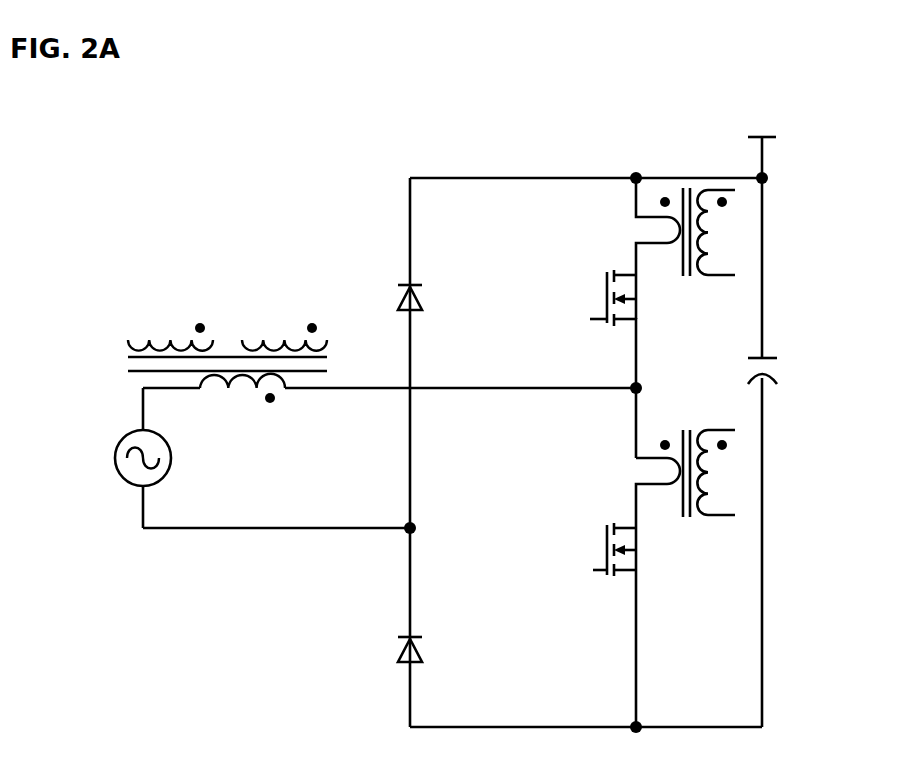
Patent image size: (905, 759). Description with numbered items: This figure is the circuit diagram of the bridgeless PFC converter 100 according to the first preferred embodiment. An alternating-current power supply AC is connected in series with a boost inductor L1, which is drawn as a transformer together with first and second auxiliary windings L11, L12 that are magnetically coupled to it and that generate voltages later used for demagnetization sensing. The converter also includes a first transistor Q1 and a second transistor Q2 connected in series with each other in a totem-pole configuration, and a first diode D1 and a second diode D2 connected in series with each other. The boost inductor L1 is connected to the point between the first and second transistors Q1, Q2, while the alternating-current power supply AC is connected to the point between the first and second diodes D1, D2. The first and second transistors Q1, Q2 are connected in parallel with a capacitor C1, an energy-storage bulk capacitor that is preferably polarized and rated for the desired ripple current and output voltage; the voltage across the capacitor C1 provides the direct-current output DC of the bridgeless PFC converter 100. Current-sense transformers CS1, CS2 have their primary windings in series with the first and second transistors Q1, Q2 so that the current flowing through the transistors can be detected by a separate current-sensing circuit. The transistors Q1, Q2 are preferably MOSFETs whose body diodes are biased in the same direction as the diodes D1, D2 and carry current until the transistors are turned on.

The bridgeless PFC converter 100 is at (386, 88).
The direct-current output DC is at (762, 145).
The first auxiliary winding L11 is at (227, 330).
The second auxiliary winding L12 is at (284, 320).
The boost inductor L1 is at (242, 403).
The alternating-current power supply AC is at (120, 458).
The first diode D1 is at (428, 300).
The second diode D2 is at (428, 651).
The current-sense transformer CS1 is at (685, 243).
The current-sense transformer CS2 is at (685, 492).
The first transistor Q1 is at (597, 298).
The second transistor Q2 is at (597, 549).
The capacitor C1 is at (778, 371).